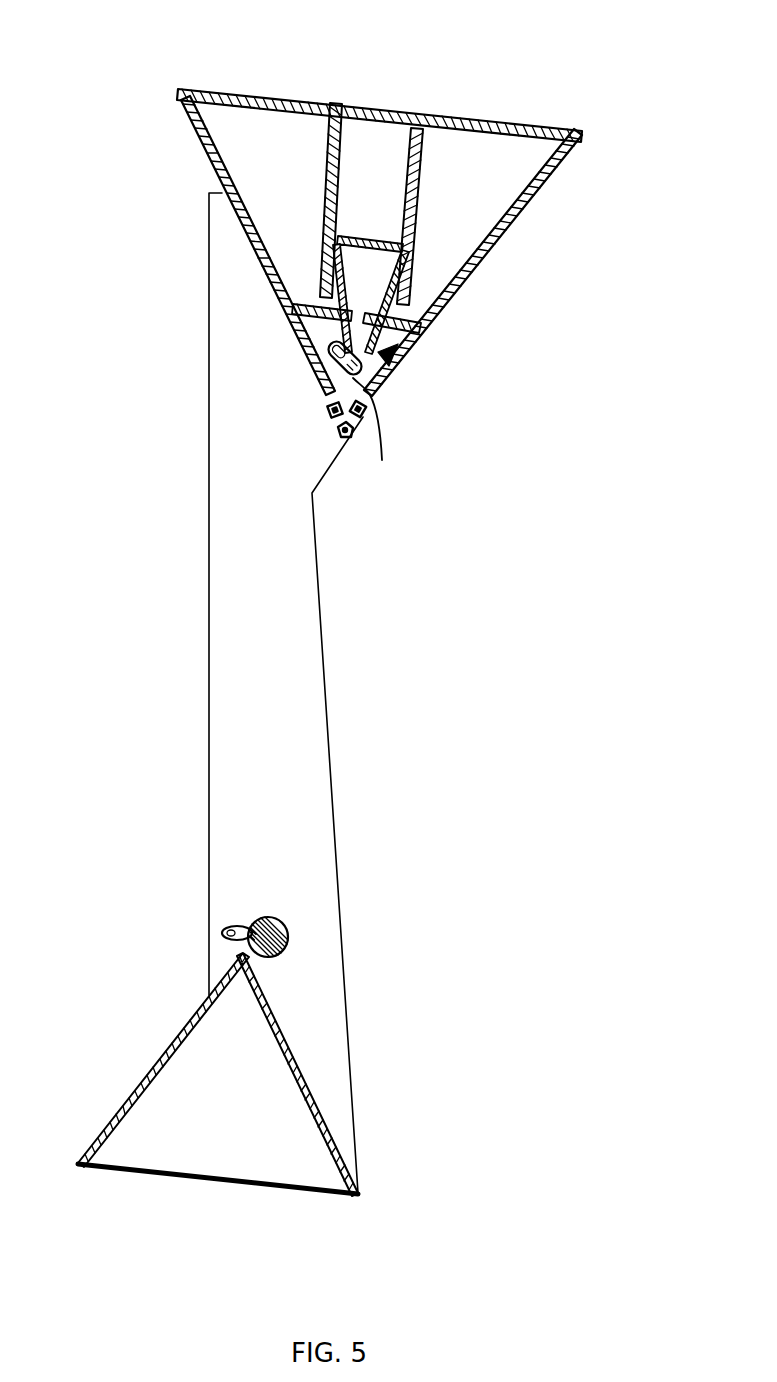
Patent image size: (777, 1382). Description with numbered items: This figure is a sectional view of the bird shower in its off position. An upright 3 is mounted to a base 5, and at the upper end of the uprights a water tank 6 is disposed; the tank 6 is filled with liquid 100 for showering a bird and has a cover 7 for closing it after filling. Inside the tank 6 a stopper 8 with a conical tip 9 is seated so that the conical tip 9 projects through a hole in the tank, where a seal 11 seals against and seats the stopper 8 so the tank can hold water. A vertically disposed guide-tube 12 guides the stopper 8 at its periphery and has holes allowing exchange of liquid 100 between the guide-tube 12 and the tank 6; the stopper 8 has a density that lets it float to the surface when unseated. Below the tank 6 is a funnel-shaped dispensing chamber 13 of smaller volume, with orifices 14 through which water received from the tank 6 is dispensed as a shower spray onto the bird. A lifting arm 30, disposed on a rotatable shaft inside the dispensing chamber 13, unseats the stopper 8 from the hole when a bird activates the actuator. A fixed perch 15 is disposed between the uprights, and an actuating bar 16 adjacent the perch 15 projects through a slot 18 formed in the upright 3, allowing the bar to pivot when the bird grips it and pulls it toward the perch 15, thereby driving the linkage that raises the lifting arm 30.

The upright 3 is at (297, 688).
The base 5 is at (147, 1075).
The water tank 6 is at (497, 248).
The cover 7 is at (288, 98).
The stopper 8 is at (386, 277).
The conical tip 9 is at (372, 334).
The seal 11 is at (291, 305).
The guide-tube 12 is at (327, 143).
The dispensing chamber 13 is at (393, 358).
The orifices 14 is at (320, 402).
The perch 15 is at (290, 940).
The actuating bar 16 is at (222, 933).
The slot 18 is at (249, 930).
The lifting arm 30 is at (373, 438).
The liquid 100 is at (497, 148).